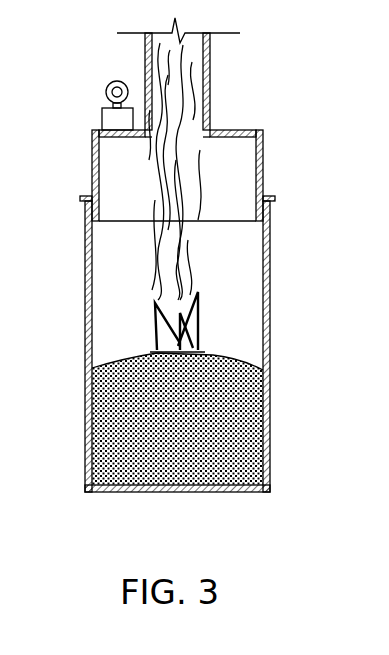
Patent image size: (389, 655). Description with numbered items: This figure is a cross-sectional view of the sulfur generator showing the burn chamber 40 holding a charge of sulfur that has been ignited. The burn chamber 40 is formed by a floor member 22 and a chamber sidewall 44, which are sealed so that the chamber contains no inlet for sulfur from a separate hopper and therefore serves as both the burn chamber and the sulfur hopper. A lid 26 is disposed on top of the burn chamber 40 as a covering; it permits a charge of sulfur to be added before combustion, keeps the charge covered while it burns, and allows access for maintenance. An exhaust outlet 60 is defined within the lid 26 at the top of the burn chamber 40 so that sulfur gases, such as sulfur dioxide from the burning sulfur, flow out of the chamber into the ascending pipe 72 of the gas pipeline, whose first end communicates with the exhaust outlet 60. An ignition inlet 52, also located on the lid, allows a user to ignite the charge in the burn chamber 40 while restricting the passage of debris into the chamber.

The floor member 22 is at (178, 495).
The lid 26 is at (263, 172).
The burn chamber 40 is at (140, 266).
The chamber sidewall 44 is at (266, 308).
The ignition inlet 52 is at (109, 86).
The exhaust outlet 60 is at (197, 128).
The ascending pipe 72 is at (210, 85).